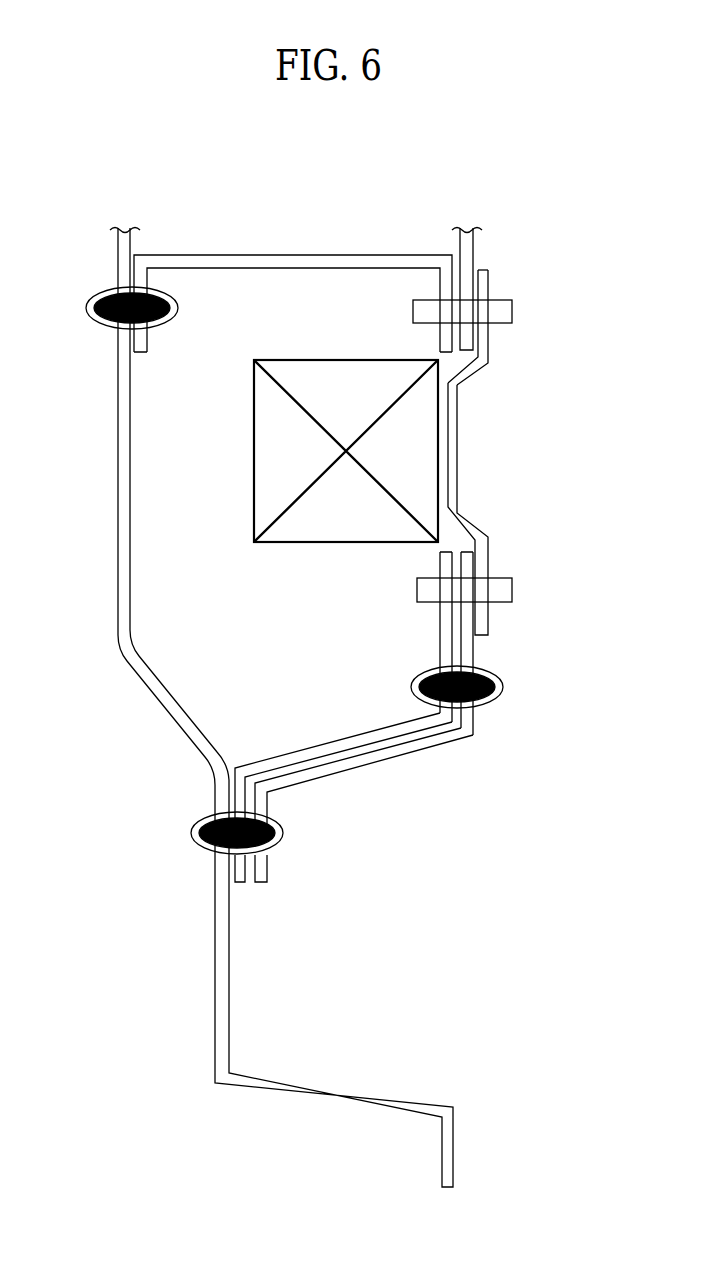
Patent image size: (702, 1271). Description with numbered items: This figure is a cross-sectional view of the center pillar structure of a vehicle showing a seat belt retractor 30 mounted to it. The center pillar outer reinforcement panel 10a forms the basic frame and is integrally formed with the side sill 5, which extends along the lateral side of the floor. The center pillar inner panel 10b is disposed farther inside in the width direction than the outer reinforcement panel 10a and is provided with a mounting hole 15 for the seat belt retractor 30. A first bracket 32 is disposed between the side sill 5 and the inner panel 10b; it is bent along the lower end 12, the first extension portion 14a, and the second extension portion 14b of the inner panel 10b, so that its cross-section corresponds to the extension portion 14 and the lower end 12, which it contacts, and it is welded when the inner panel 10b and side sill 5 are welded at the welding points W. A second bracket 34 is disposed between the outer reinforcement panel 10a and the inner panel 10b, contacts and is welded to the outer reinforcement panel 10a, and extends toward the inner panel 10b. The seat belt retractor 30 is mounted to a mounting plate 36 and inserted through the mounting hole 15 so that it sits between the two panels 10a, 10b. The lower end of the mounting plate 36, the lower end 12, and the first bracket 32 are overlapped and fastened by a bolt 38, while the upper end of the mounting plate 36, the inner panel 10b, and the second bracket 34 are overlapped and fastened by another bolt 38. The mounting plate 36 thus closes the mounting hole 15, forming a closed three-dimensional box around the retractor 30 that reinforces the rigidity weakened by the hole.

The side sill 5 is at (215, 955).
The center pillar outer reinforcement panel 10a is at (117, 400).
The center pillar inner panel 10b is at (474, 248).
The lower end 12 is at (474, 650).
The extension portion 14 is at (370, 805).
The first extension portion 14a is at (355, 770).
The second extension portion 14b is at (267, 870).
The mounting hole 15 is at (467, 432).
The seat belt retractor 30 is at (254, 450).
The first bracket 32 is at (335, 743).
The second bracket 34 is at (300, 256).
The mounting plate 36 is at (470, 378).
The bolt 38 is at (512, 306).
The welding point W is at (98, 292).